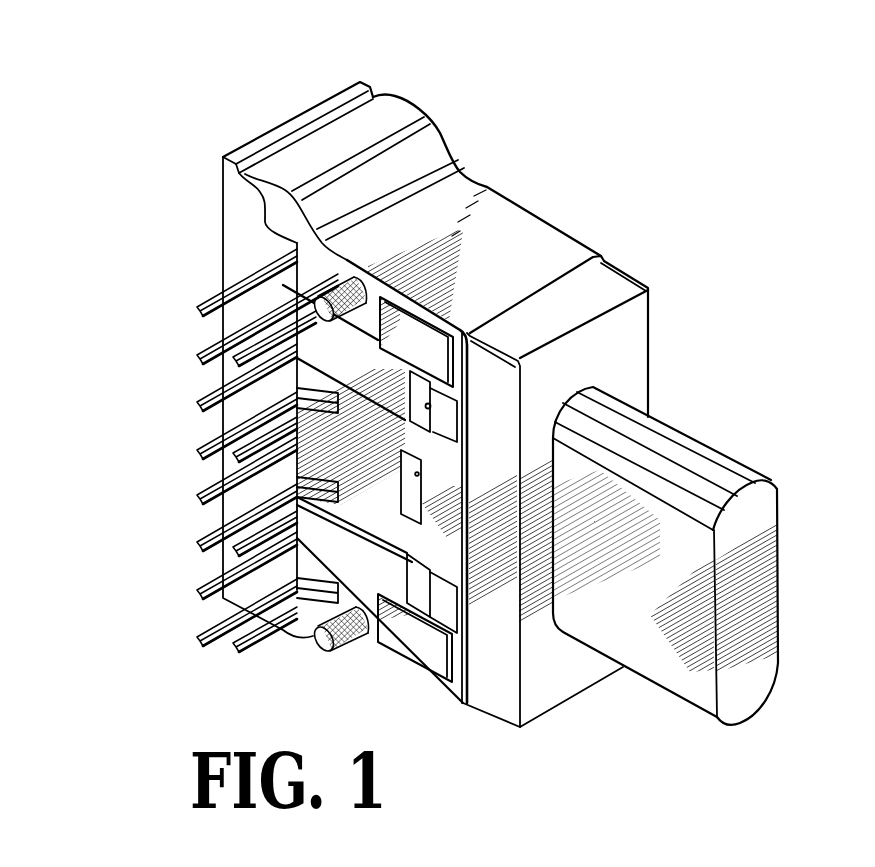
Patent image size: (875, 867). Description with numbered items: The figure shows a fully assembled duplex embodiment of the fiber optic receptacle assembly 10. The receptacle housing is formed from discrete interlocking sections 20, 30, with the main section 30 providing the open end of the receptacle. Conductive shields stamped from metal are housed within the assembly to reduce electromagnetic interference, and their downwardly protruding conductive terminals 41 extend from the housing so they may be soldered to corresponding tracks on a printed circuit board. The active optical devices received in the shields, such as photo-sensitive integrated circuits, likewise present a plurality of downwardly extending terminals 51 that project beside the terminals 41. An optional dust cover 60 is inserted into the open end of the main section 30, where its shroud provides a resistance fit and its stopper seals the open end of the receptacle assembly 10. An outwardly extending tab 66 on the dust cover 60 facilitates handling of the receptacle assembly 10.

The fiber optic receptacle assembly 10 is at (466, 392).
The interlocking section 20 is at (278, 120).
The main section 30 is at (435, 442).
The conductive terminal 41 is at (253, 637).
The terminal 51 is at (200, 627).
The dust cover 60 is at (692, 564).
The tab 66 is at (745, 680).